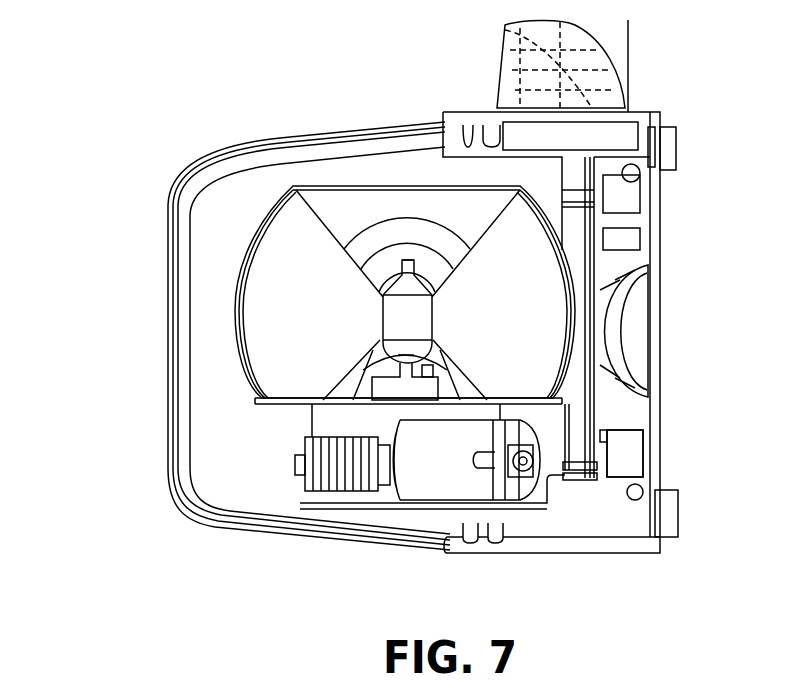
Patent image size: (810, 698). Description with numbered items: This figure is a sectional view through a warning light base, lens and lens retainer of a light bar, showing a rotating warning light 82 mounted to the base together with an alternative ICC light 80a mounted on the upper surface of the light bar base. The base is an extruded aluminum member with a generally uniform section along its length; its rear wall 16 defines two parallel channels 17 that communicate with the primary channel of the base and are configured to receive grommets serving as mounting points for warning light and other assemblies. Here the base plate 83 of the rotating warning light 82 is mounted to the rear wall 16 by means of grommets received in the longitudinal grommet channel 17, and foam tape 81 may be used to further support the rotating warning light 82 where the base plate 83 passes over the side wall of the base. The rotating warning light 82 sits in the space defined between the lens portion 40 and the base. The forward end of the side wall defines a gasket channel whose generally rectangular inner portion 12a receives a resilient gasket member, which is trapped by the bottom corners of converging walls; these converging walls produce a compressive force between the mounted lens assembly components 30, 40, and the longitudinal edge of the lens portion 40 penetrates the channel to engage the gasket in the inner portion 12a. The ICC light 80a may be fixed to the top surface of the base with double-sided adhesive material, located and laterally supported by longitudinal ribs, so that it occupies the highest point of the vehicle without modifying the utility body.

The lens assembly component 30 is at (148, 230).
The rotating warning light 82 is at (262, 398).
The lens portion 40 is at (210, 304).
The base plate 83 is at (570, 478).
The rear wall 16 is at (622, 262).
The parallel channel 17 is at (623, 455).
The gasket channel inner portion 12a is at (471, 547).
The foam tape 81 is at (485, 512).
The ICC light 80a is at (625, 62).